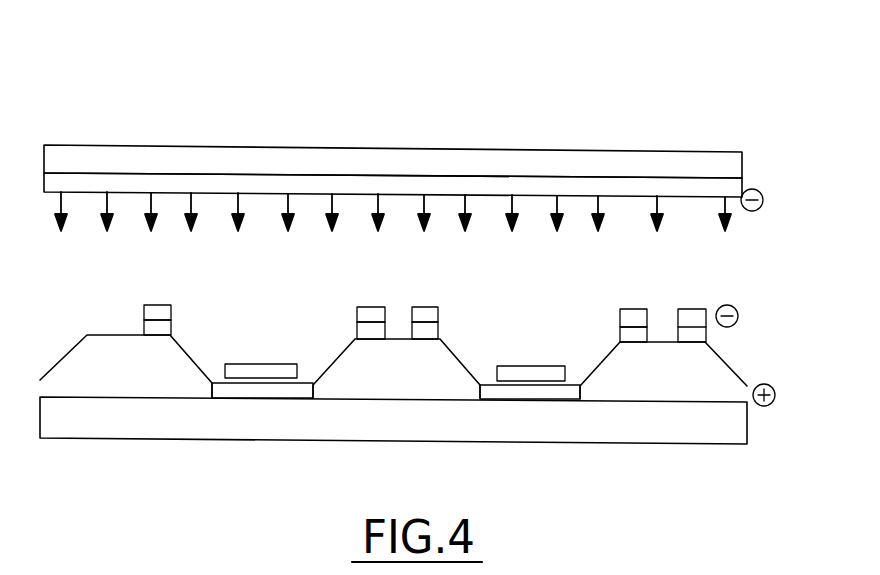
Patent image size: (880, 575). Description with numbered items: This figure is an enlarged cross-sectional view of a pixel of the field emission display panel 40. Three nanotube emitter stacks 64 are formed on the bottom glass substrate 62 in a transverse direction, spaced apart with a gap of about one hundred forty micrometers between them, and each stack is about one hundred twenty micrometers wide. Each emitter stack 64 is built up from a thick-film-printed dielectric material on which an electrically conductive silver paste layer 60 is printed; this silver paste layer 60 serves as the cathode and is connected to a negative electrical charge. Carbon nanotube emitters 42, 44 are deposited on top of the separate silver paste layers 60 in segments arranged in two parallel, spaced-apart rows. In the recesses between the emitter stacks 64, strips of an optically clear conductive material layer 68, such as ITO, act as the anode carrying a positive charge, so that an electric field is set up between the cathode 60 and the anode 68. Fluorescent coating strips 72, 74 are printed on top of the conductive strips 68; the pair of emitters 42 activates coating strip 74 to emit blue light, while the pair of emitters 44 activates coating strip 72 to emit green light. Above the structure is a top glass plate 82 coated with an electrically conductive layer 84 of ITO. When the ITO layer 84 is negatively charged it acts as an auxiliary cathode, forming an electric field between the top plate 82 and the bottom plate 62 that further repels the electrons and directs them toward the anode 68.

The field emission display panel 40 is at (724, 73).
The nanotube emitters 42 is at (422, 312).
The nanotube emitters 44 is at (162, 310).
The silver paste layer 60 is at (165, 328).
The bottom glass substrate 62 is at (728, 425).
The emitter stacks 64 is at (121, 411).
The conductive material layer 68 is at (223, 392).
The fluorescent coating strip 72 is at (265, 375).
The fluorescent coating strip 74 is at (518, 378).
The top glass plate 82 is at (728, 160).
The electrically conductive layer 84 is at (732, 190).